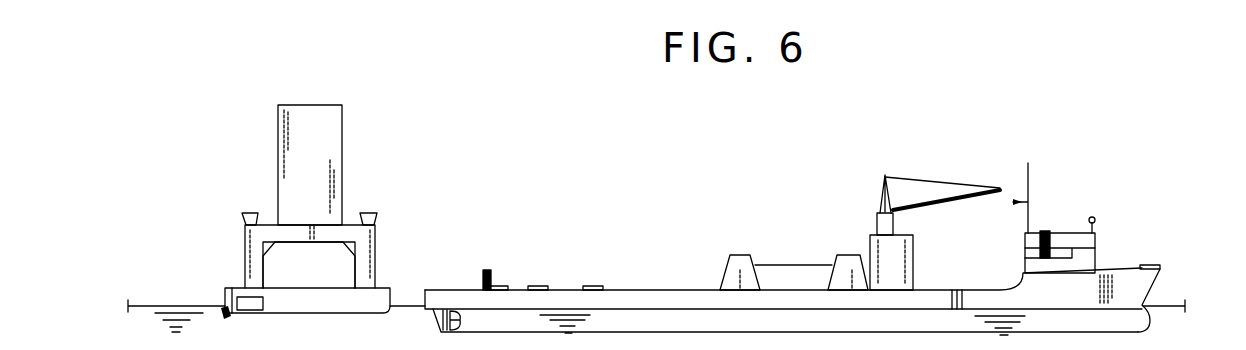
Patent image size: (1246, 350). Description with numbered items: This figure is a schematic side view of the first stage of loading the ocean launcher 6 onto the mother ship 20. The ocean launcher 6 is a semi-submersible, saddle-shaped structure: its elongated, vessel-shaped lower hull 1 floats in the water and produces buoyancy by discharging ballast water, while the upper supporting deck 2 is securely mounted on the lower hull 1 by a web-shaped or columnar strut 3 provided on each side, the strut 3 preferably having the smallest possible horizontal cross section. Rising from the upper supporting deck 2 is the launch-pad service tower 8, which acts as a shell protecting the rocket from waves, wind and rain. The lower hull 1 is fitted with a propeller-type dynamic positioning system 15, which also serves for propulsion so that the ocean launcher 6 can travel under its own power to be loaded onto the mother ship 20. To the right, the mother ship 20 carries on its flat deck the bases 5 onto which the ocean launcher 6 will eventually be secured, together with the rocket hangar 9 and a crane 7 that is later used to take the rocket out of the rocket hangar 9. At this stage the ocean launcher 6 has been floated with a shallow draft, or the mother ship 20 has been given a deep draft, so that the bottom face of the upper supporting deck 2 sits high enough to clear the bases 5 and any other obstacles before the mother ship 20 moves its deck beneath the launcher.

The lower hull 1 is at (238, 288).
The upper supporting deck 2 is at (352, 225).
The strut 3 is at (257, 276).
The base 5 is at (740, 255).
The ocean launcher 6 is at (357, 167).
The crane 7 is at (953, 200).
The launch-pad service tower 8 is at (342, 117).
The rocket hangar 9 is at (900, 280).
The dynamic positioning system 15 is at (233, 319).
The mother ship 20 is at (1160, 280).